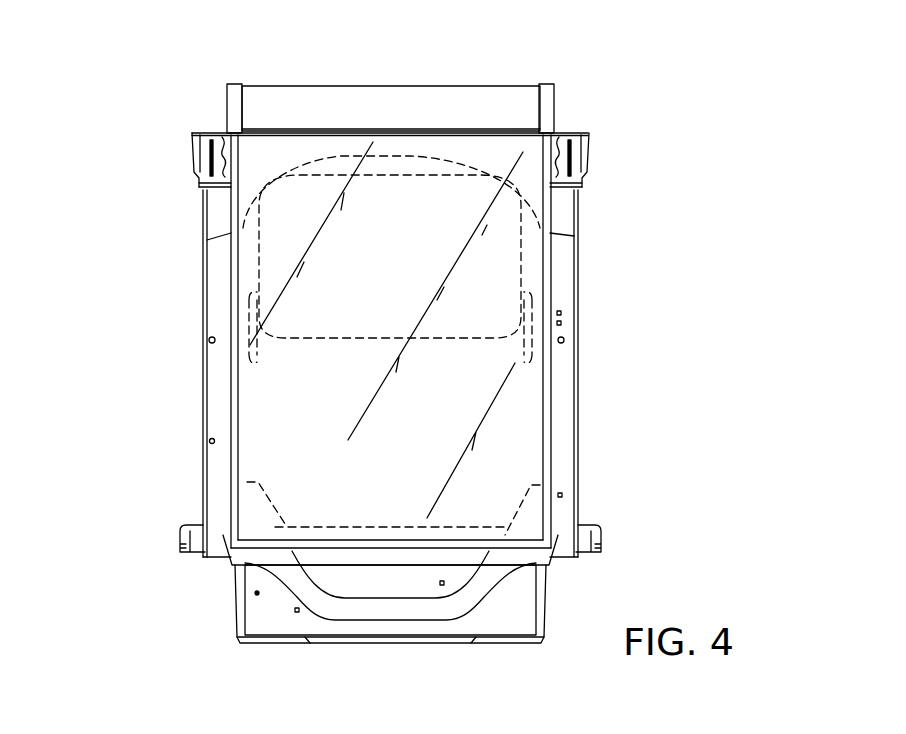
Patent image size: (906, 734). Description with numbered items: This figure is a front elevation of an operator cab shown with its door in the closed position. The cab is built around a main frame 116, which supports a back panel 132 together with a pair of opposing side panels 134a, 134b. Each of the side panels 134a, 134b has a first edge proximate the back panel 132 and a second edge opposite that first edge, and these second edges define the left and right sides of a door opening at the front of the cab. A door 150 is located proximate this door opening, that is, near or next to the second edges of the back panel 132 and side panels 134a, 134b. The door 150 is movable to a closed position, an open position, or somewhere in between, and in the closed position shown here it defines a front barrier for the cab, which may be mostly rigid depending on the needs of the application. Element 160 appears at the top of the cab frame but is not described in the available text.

The main frame 116 is at (397, 330).
The handle bar 160 is at (402, 85).
The side panel 134a is at (552, 263).
The side panel 134b is at (229, 255).
The back panel 132 is at (343, 378).
The door 150 is at (314, 383).